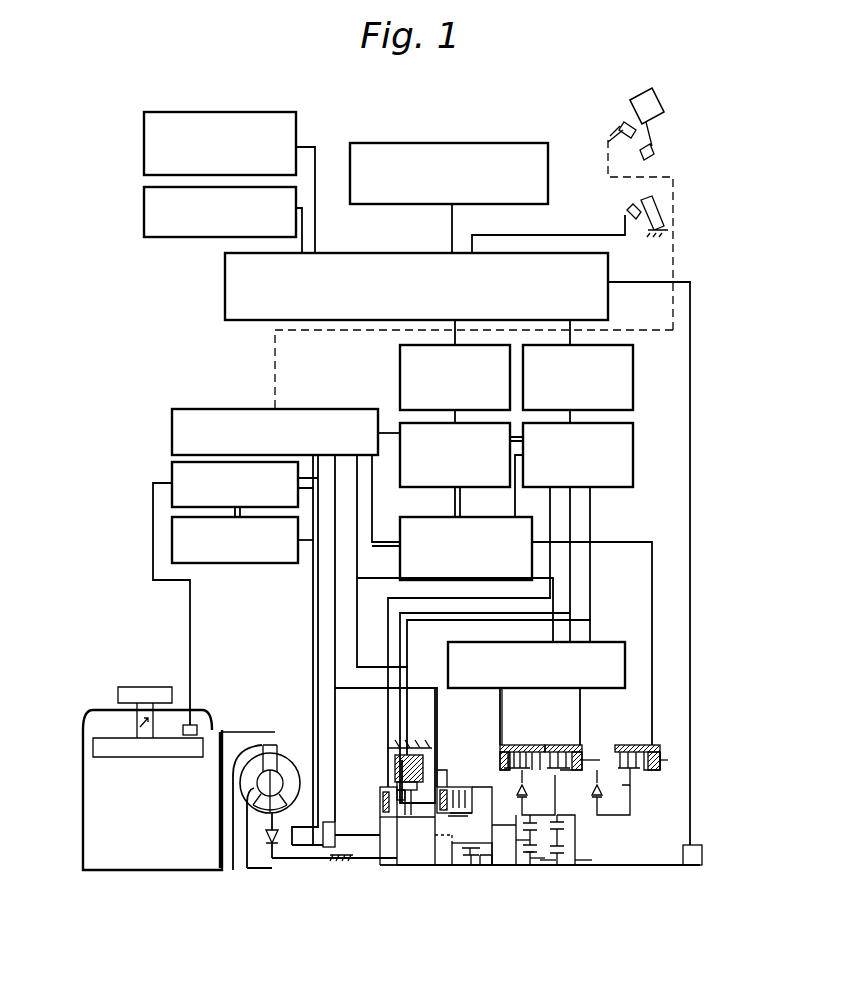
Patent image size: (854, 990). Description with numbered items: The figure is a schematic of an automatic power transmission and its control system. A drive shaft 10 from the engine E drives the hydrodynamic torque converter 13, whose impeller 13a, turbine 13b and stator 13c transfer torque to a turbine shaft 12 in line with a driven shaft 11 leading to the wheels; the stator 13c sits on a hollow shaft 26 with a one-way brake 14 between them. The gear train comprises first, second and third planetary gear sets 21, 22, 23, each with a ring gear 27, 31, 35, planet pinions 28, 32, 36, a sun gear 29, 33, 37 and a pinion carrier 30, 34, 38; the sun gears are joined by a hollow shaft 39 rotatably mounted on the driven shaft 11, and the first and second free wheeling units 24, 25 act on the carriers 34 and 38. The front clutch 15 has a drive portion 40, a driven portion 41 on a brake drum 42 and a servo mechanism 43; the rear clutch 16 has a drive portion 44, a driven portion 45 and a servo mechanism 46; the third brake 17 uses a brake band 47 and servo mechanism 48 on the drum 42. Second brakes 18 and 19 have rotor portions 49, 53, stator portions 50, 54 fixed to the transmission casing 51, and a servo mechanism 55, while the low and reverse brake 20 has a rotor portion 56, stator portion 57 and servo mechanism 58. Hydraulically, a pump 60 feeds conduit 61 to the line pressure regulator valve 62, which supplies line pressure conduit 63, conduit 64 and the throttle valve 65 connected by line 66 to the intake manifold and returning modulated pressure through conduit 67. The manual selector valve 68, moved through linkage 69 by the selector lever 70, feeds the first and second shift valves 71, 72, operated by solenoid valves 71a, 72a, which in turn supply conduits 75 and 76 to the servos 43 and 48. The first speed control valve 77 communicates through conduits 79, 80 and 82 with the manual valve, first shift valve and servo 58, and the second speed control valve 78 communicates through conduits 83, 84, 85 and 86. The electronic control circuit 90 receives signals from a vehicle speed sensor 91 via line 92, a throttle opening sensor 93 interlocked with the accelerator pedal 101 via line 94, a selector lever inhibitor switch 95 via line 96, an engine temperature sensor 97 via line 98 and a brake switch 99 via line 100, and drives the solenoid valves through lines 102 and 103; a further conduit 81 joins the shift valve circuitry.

The drive shaft 10 is at (222, 868).
The driven shaft 11 is at (665, 866).
The turbine shaft 12 is at (410, 862).
The hydrodynamic torque converter 13 is at (270, 779).
The impeller 13a is at (282, 752).
The turbine 13b is at (248, 750).
The stator 13c is at (262, 855).
The one-way brake 14 is at (284, 855).
The front clutch 15 is at (380, 802).
The rear clutch 16 is at (455, 787).
The third brake 17 is at (421, 750).
The second brake 18 is at (515, 746).
The second brake 19 is at (558, 746).
The low and reverse brake 20 is at (645, 745).
The first planetary gear set 21 is at (470, 870).
The second planetary gear set 22 is at (537, 908).
The third planetary gear set 23 is at (562, 872).
The first free wheeling unit 24 is at (555, 802).
The second free wheeling unit 25 is at (630, 802).
The hollow shaft 26 is at (318, 862).
The ring gear 27 is at (452, 850).
The planet pinions 28 is at (452, 836).
The sun gear 29 is at (468, 865).
The pinion carrier 30 is at (452, 862).
The ring gear 31 is at (517, 866).
The planet pinions 32 is at (527, 866).
The sun gear 33 is at (550, 866).
The pinion carrier 34 is at (505, 848).
The ring gear 35 is at (556, 826).
The planet pinions 36 is at (564, 838).
The sun gear 37 is at (580, 866).
The pinion carrier 38 is at (575, 852).
The hollow shaft 39 is at (482, 866).
The drive portion 40 is at (380, 866).
The driven portion 41 is at (397, 794).
The brake drum 42 is at (437, 750).
The servo mechanism 43 is at (397, 812).
The drive portion 44 is at (468, 787).
The driven portion 45 is at (470, 815).
The servo mechanism 46 is at (415, 805).
The brake band 47 is at (397, 785).
The servo mechanism 48 is at (395, 752).
The rotor portion 49 is at (505, 745).
The stator portion 50 is at (490, 745).
The transmission casing 51 is at (542, 752).
The rotor portion 53 is at (597, 798).
The stator portion 54 is at (580, 752).
The servo mechanism 55 is at (582, 762).
The rotor portion 56 is at (630, 778).
The stator portion 57 is at (662, 752).
The servo mechanism 58 is at (663, 762).
The source of fluid pressure 60 is at (335, 838).
The fluid pressure conduit 61 is at (313, 682).
The line pressure regulator valve 62 is at (198, 563).
The line pressure conduit 63 is at (313, 548).
The conduit 64 is at (312, 560).
The throttle valve 65 is at (172, 470).
The line 66 is at (190, 612).
The conduit 67 is at (172, 528).
The manual selector valve 68 is at (246, 409).
The mechanical linkage 69 is at (330, 331).
The manual selector lever 70 is at (655, 152).
The first shift valve 71 is at (400, 433).
The first solenoid valve 71a is at (400, 380).
The second shift valve 72 is at (633, 428).
The second solenoid valve 72a is at (633, 360).
The conduit 75 is at (600, 542).
The conduit 76 is at (570, 506).
The first speed control valve 77 is at (455, 513).
The second speed control valve 78 is at (566, 642).
The conduit 79 is at (386, 456).
The conduit 80 is at (461, 500).
The hydraulic passage 81 is at (516, 500).
The conduit 82 is at (655, 588).
The conduit 83 is at (358, 562).
The conduit 84 is at (590, 492).
The conduit 85 is at (500, 718).
The conduit 86 is at (582, 700).
The electronic control circuit 90 is at (398, 253).
The vehicle speed sensor 91 is at (686, 845).
The line 92 is at (690, 465).
The throttle opening sensor 93 is at (630, 212).
The line 94 is at (535, 232).
The selector lever inhibitor switch 95 is at (523, 143).
The line 96 is at (452, 212).
The engine temperature sensor 97 is at (296, 121).
The line 98 is at (315, 160).
The brake switch 99 is at (296, 200).
The line 100 is at (306, 232).
The accelerator pedal 101 is at (673, 212).
The line 102 is at (455, 328).
The line 103 is at (600, 322).